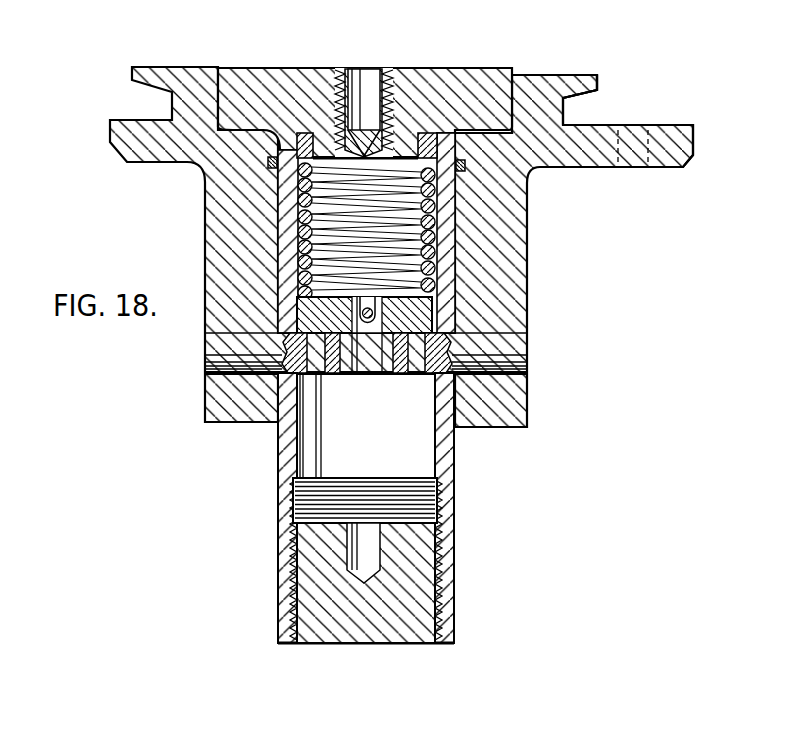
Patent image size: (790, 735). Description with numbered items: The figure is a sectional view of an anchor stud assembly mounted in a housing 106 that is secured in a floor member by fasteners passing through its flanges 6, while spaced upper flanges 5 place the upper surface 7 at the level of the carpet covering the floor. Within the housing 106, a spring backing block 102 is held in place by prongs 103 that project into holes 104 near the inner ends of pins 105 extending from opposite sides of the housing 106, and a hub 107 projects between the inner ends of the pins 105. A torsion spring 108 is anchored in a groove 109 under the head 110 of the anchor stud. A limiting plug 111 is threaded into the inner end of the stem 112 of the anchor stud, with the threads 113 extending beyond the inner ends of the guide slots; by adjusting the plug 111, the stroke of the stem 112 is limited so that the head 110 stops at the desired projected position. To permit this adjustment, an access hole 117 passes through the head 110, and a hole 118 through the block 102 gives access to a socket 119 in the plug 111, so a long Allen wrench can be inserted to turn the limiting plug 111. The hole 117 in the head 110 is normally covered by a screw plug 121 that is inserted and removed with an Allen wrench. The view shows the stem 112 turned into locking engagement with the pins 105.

The upper flanges 5 is at (600, 81).
The flanges 6 is at (672, 128).
The upper surface 7 is at (572, 75).
The spring backing block 102 is at (410, 315).
The prongs 103 is at (308, 367).
The holes 104 is at (305, 385).
The pins 105 is at (207, 348).
The housing 106 is at (513, 245).
The hub 107 is at (382, 356).
The torsion spring 108 is at (435, 222).
The groove 109 is at (420, 140).
The head 110 is at (490, 80).
The limiting plug 111 is at (420, 549).
The stem 112 is at (448, 465).
The threads 113 is at (432, 501).
The access hole 117 is at (358, 78).
The hole 118 is at (366, 425).
The socket 119 is at (352, 548).
The screw plug 121 is at (385, 72).